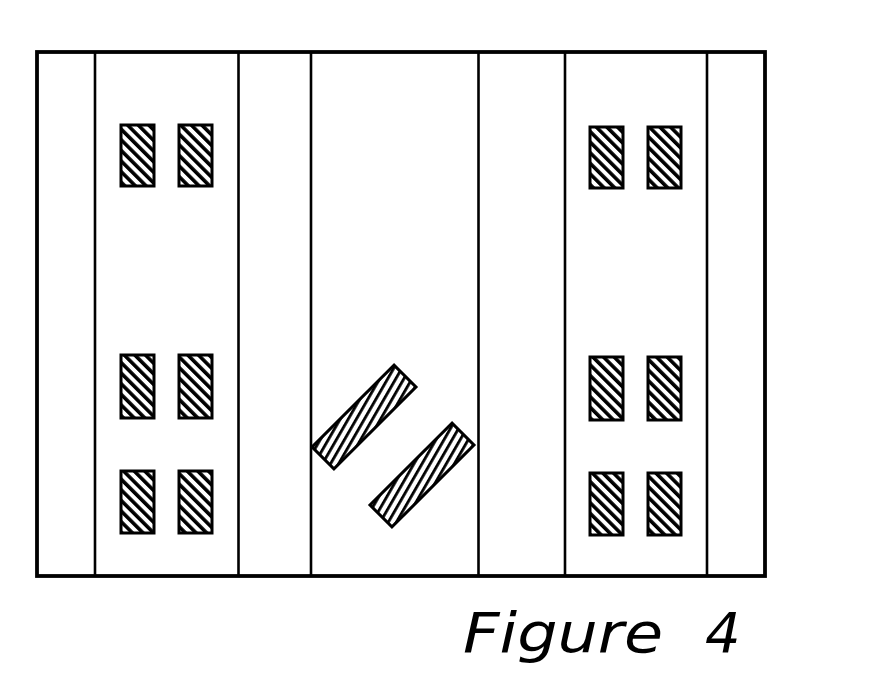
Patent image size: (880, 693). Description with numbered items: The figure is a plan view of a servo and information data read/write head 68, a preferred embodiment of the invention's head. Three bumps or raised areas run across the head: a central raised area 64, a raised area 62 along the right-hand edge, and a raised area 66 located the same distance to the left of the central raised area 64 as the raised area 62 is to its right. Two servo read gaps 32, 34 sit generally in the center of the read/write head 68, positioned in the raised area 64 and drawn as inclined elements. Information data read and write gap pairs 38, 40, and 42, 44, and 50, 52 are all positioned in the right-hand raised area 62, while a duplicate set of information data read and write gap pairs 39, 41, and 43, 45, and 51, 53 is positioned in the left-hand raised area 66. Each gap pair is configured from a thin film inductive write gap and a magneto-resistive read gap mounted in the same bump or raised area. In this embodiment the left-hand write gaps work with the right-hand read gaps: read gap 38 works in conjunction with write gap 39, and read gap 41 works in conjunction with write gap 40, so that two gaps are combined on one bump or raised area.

The read/write head 68 is at (768, 93).
The raised area 66 is at (178, 51).
The raised area 64 is at (407, 51).
The raised area 62 is at (653, 51).
The servo read gap 32 is at (383, 375).
The servo read gap 34 is at (427, 488).
The read gap 38 is at (618, 457).
The write gap 39 is at (143, 471).
The write gap 40 is at (675, 460).
The read gap 41 is at (198, 471).
The information data read and write gap 42 is at (613, 342).
The information data read and write gap 43 is at (143, 355).
The information data read and write gap 44 is at (662, 357).
The information data read and write gap 45 is at (198, 355).
The information data read and write gap 50 is at (610, 127).
The information data read and write gap 51 is at (136, 125).
The information data read and write gap 52 is at (680, 112).
The information data read and write gap 53 is at (191, 125).